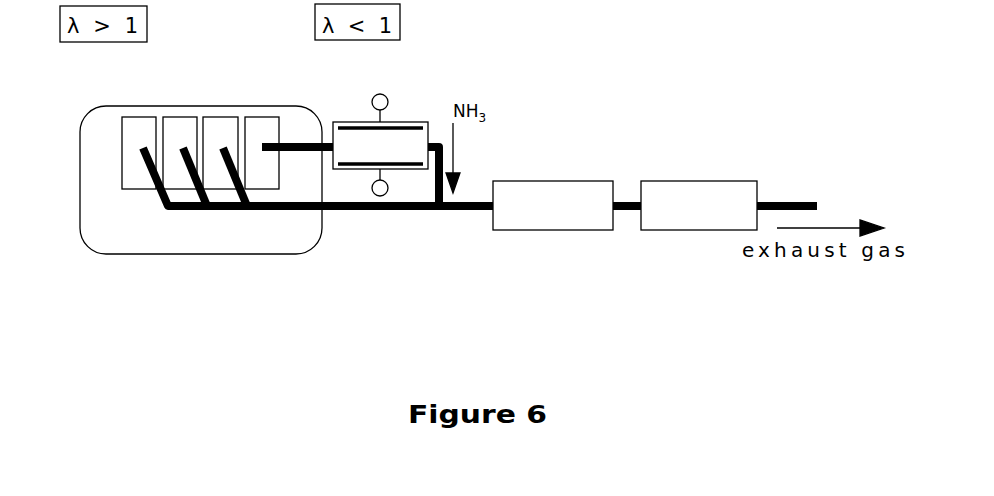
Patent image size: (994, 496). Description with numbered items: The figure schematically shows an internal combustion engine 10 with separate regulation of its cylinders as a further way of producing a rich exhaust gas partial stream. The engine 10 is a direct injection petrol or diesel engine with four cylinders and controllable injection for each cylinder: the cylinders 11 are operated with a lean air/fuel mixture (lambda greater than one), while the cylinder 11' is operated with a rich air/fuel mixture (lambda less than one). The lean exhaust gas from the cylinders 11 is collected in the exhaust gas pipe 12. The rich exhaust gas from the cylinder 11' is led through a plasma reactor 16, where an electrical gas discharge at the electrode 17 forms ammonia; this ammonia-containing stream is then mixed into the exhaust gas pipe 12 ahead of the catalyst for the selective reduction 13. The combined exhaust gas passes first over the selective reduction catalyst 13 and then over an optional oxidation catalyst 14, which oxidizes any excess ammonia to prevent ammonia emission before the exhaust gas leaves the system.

The internal combustion engine 10 is at (108, 235).
The cylinders 11 is at (180, 100).
The cylinder 11' is at (275, 100).
The exhaust gas pipe 12 is at (358, 212).
The catalyst for the selective reduction 13 is at (520, 192).
The oxidation catalyst 14 is at (667, 192).
The plasma reactor 16 is at (398, 145).
The electrode of the plasma reactor 17 is at (360, 125).